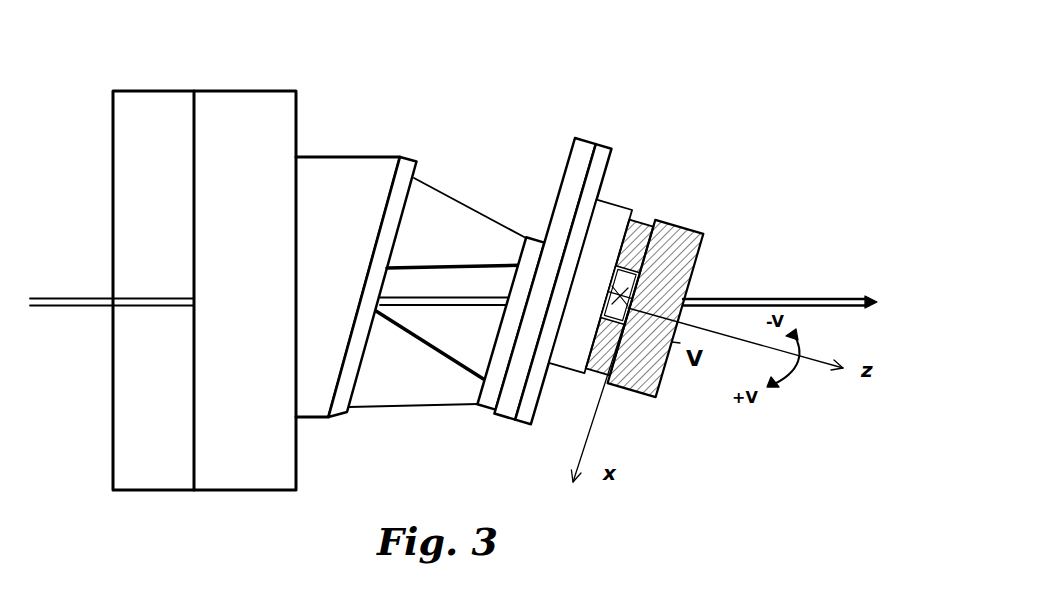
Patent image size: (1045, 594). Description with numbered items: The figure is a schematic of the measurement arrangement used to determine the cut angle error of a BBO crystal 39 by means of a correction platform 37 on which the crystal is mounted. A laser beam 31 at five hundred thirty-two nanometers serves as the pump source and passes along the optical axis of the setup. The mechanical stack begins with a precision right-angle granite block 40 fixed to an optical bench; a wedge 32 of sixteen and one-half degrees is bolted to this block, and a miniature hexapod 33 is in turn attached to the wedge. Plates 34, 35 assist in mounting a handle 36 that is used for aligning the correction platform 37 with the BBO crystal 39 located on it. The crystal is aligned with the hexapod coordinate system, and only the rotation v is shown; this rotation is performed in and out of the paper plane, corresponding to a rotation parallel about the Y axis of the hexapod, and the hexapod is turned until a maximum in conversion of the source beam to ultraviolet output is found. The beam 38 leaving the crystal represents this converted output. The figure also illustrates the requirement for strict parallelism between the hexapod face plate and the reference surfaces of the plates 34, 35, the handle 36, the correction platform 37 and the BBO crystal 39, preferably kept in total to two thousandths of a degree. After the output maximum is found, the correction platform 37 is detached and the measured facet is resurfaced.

The laser beam 31 is at (107, 296).
The wedge 32 is at (360, 180).
The miniature hexapod 33 is at (462, 240).
The plate 34 is at (568, 183).
The plate 35 is at (600, 160).
The handle 36 is at (617, 212).
The correction platform 37 is at (668, 282).
The output beam 38 is at (812, 300).
The BBO crystal 39 is at (630, 305).
The granite block 40 is at (190, 379).